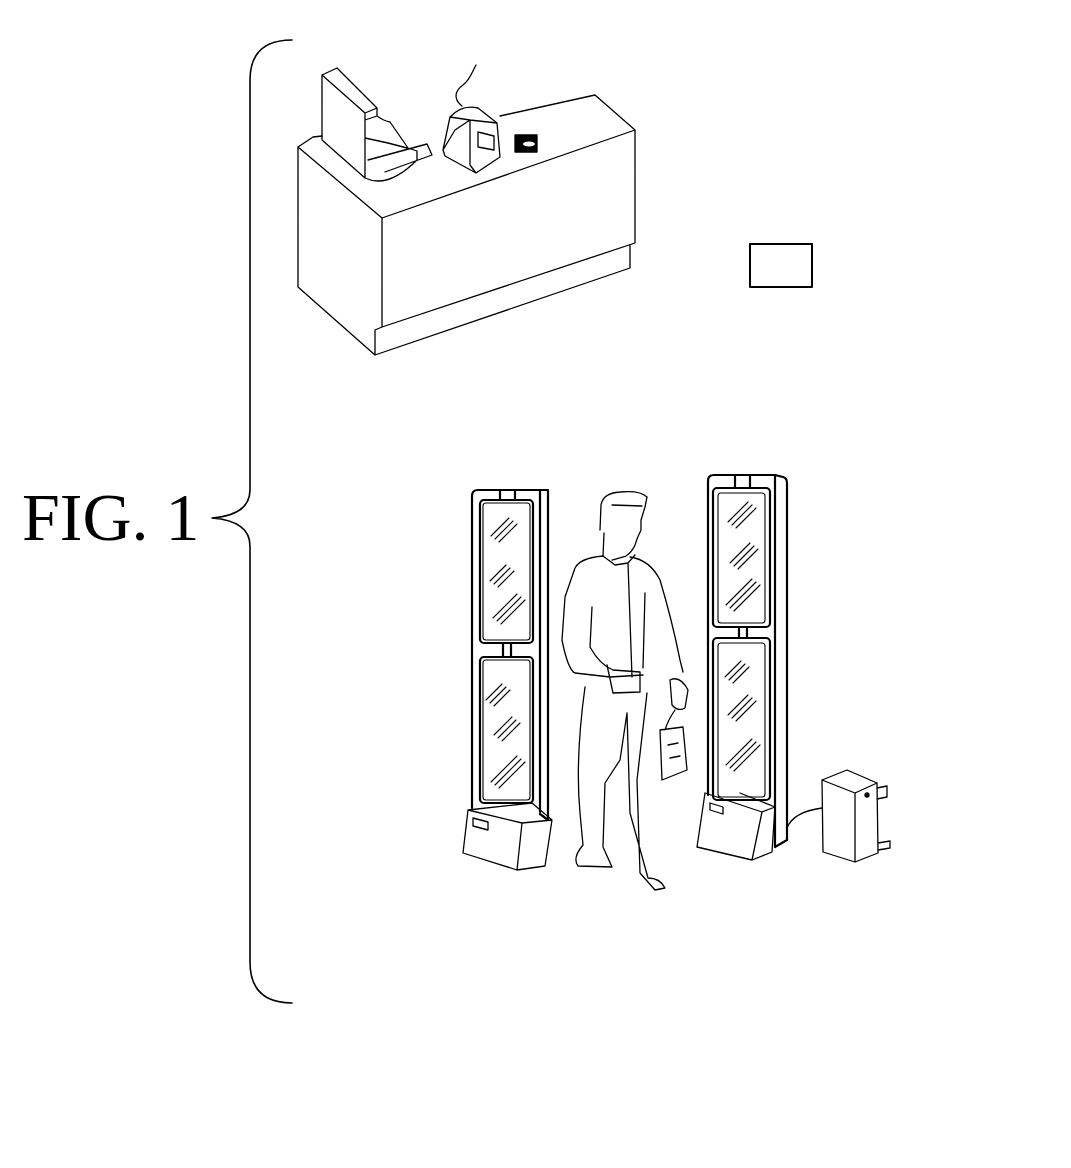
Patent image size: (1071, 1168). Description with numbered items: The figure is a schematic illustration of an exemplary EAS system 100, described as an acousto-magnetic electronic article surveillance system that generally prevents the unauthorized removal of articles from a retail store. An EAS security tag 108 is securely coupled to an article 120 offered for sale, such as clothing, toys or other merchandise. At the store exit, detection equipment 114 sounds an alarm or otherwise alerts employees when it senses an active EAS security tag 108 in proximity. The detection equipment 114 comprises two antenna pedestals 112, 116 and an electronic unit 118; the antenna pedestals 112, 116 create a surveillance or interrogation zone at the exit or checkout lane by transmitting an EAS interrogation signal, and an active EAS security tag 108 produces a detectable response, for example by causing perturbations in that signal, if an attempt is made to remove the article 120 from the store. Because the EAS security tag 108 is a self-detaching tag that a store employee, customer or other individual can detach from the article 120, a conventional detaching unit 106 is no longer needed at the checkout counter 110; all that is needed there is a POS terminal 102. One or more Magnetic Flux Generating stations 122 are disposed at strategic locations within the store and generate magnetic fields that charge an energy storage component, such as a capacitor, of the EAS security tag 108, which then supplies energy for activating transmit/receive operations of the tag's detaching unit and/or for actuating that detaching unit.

The EAS system 100 is at (757, 116).
The POS terminal 102 is at (358, 83).
The detaching unit 106 is at (471, 105).
The EAS security tag 108 is at (548, 136).
The checkout counter 110 is at (572, 97).
The antenna pedestal 112 is at (472, 560).
The detection equipment 114 is at (771, 437).
The antenna pedestal 116 is at (786, 596).
The electronic unit 118 is at (838, 772).
The article 120 is at (532, 165).
The Magnetic Flux Generating station 122 is at (798, 275).